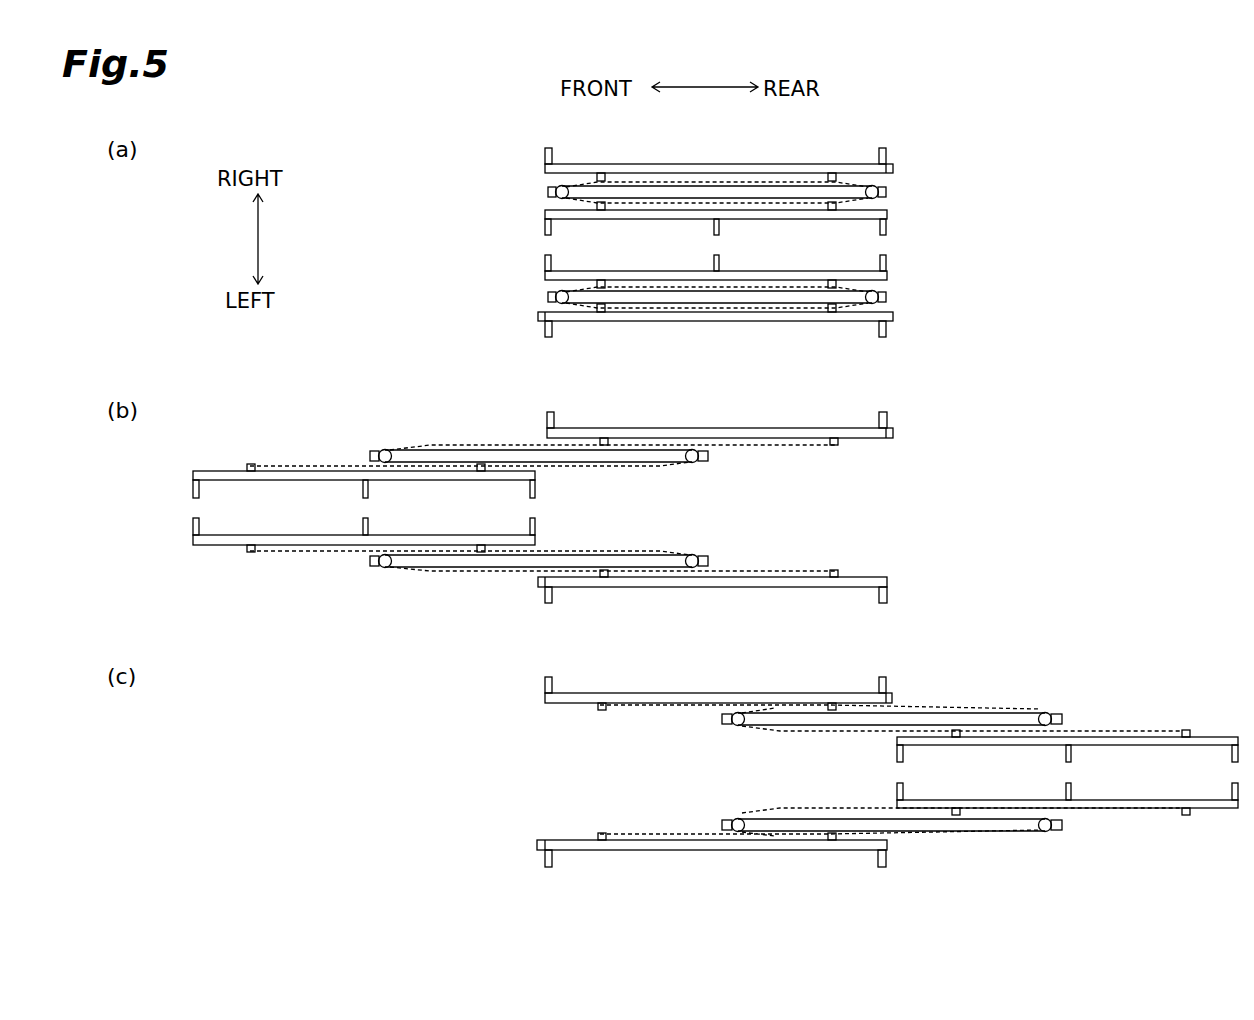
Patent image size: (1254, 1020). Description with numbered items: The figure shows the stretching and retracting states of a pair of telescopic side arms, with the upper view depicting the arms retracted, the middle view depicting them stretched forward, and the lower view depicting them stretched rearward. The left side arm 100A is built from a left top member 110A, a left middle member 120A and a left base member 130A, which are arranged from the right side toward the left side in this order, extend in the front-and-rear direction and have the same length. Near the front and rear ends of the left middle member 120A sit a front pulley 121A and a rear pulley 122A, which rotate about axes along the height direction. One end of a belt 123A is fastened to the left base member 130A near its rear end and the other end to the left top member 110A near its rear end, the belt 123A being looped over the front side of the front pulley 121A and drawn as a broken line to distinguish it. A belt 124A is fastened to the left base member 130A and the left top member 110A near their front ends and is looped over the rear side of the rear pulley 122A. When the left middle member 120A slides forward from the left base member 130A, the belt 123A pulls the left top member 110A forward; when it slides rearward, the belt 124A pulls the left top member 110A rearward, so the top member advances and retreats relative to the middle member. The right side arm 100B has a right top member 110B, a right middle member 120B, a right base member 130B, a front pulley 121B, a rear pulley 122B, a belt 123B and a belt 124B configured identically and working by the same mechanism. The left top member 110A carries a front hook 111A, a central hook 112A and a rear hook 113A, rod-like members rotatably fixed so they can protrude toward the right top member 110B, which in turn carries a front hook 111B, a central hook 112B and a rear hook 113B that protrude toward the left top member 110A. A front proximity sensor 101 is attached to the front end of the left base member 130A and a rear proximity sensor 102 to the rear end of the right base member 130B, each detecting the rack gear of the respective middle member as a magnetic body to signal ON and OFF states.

In FIG. 5A, the left side arm 100A is at (912, 337).
In FIG. 5B, the left side arm 100A is at (924, 602).
In FIG. 5C, the left side arm 100A is at (515, 859).
In FIG. 5A, the right side arm 100B is at (912, 134).
In FIG. 5B, the right side arm 100B is at (925, 430).
In FIG. 5C, the right side arm 100B is at (516, 706).
In FIG. 5A, the front proximity sensor 101 is at (540, 316).
In FIG. 5B, the front proximity sensor 101 is at (540, 587).
In FIG. 5C, the front proximity sensor 101 is at (540, 840).
In FIG. 5A, the rear proximity sensor 102 is at (892, 168).
In FIG. 5B, the rear proximity sensor 102 is at (893, 436).
In FIG. 5C, the rear proximity sensor 102 is at (892, 700).
In FIG. 5A, the left top member 110A is at (884, 270).
In FIG. 5B, the left top member 110A is at (218, 545).
In FIG. 5C, the left top member 110A is at (1208, 808).
In FIG. 5A, the right top member 110B is at (890, 214).
In FIG. 5B, the right top member 110B is at (222, 471).
In FIG. 5C, the right top member 110B is at (1210, 737).
In FIG. 5A, the front hook 111A is at (548, 266).
In FIG. 5A, the front hook 111B is at (548, 224).
In FIG. 5A, the central hook 112A is at (714, 262).
In FIG. 5A, the central hook 112B is at (714, 230).
In FIG. 5A, the rear hook 113A is at (880, 262).
In FIG. 5A, the rear hook 113B is at (880, 228).
In FIG. 5A, the left middle member 120A is at (886, 297).
In FIG. 5B, the left middle member 120A is at (433, 567).
In FIG. 5C, the left middle member 120A is at (1000, 831).
In FIG. 5A, the right middle member 120B is at (886, 192).
In FIG. 5B, the right middle member 120B is at (436, 450).
In FIG. 5C, the right middle member 120B is at (998, 713).
In FIG. 5A, the front pulley 121A is at (548, 297).
In FIG. 5A, the front pulley 121B is at (548, 191).
In FIG. 5A, the rear pulley 122A is at (880, 294).
In FIG. 5A, the rear pulley 122B is at (870, 186).
In FIG. 5A, the belt 123A is at (597, 313).
In FIG. 5A, the belt 123B is at (597, 176).
In FIG. 5A, the belt 124A is at (832, 313).
In FIG. 5A, the belt 124B is at (830, 173).
In FIG. 5A, the left base member 130A is at (893, 316).
In FIG. 5B, the left base member 130A is at (812, 587).
In FIG. 5C, the left base member 130A is at (797, 850).
In FIG. 5A, the right base member 130B is at (892, 176).
In FIG. 5B, the right base member 130B is at (810, 428).
In FIG. 5C, the right base member 130B is at (693, 693).